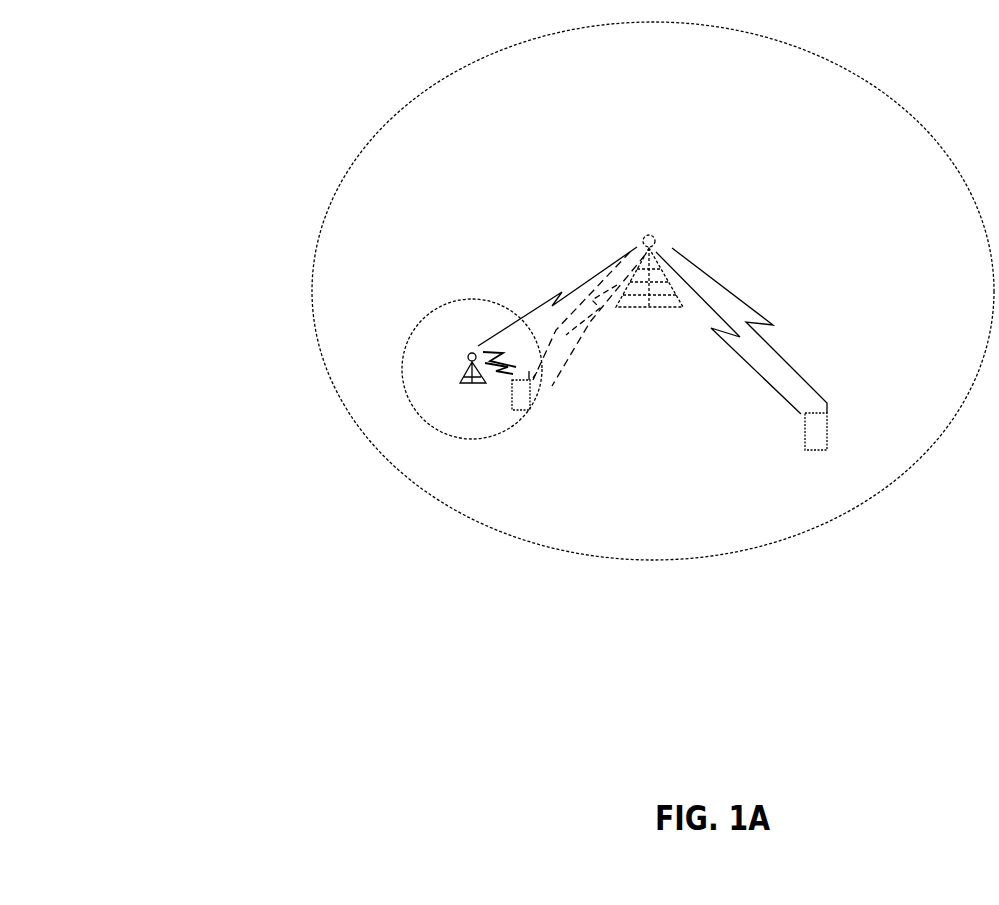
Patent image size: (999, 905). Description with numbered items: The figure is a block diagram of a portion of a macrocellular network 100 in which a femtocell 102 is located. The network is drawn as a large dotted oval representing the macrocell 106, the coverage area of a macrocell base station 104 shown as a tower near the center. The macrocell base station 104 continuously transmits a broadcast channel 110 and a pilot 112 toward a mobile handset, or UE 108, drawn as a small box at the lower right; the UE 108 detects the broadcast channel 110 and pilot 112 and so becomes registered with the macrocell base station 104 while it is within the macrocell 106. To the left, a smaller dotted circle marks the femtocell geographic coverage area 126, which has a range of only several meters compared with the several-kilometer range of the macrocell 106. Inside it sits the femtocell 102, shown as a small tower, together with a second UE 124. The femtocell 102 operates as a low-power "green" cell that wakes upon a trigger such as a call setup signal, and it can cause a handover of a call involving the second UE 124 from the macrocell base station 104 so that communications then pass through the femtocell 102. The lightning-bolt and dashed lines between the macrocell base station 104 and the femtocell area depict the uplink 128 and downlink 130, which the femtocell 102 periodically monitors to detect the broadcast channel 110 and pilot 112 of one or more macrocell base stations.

The macrocellular network 100 is at (175, 72).
The femtocell 102 is at (450, 348).
The macrocell base station 104 is at (668, 228).
The macrocell 106 is at (894, 94).
The mobile handset (UE) 108 is at (805, 437).
The broadcast channel (BCH) 110 is at (773, 346).
The pilot 112 is at (749, 325).
The second UE 124 is at (519, 414).
The femtocell geographic coverage area 126 is at (473, 298).
The uplink 128 is at (597, 272).
The downlink 130 is at (706, 348).